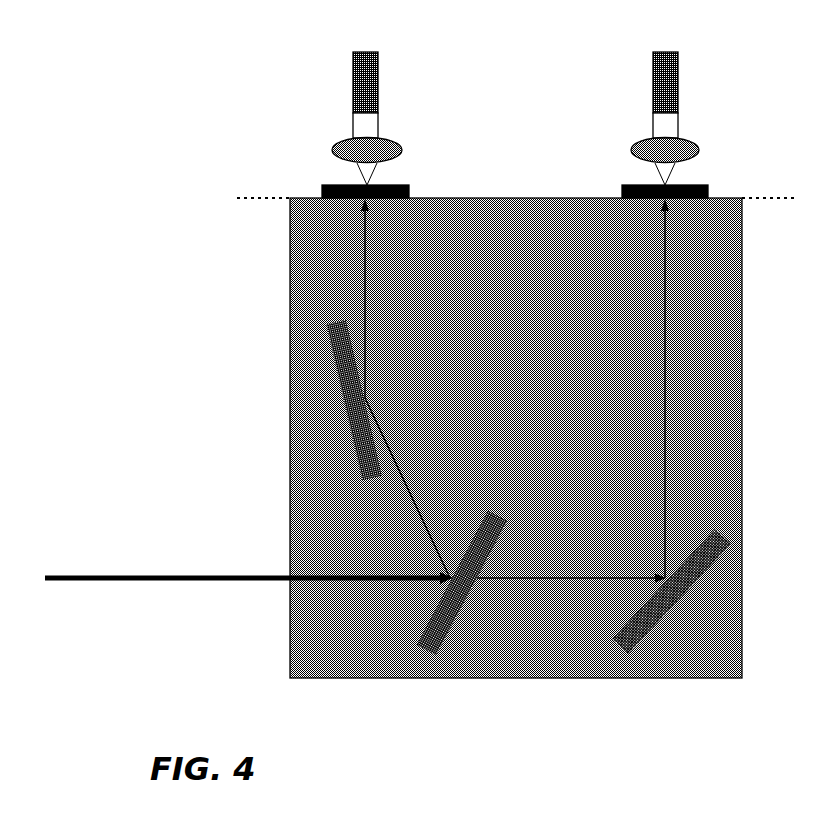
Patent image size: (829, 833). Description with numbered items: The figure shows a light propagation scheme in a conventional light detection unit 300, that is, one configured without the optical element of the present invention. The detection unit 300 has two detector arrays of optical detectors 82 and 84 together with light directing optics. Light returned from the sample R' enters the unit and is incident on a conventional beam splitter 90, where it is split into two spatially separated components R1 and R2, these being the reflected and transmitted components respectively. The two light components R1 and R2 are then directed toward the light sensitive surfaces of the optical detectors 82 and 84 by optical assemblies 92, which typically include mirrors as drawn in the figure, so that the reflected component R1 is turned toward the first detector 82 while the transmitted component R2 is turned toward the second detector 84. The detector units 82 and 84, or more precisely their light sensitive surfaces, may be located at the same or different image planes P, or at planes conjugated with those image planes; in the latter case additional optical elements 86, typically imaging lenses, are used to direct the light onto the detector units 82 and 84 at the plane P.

The optical detector 82 is at (354, 83).
The optical detector 84 is at (653, 77).
The additional optical element 86 is at (633, 147).
The image plane P is at (250, 195).
The light detection unit 300 is at (252, 534).
The optical assembly 92 is at (647, 608).
The beam splitter 90 is at (436, 652).
The reflected light component R1 is at (402, 473).
The transmitted light component R2 is at (563, 580).
The light returned from the sample R' is at (248, 608).